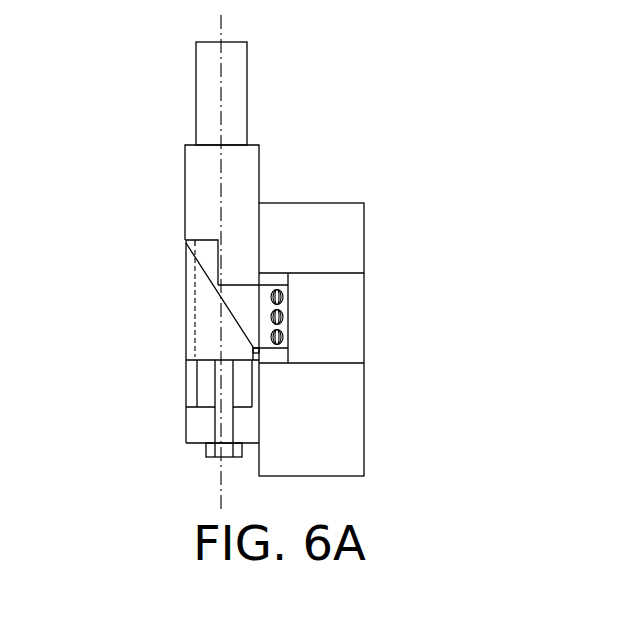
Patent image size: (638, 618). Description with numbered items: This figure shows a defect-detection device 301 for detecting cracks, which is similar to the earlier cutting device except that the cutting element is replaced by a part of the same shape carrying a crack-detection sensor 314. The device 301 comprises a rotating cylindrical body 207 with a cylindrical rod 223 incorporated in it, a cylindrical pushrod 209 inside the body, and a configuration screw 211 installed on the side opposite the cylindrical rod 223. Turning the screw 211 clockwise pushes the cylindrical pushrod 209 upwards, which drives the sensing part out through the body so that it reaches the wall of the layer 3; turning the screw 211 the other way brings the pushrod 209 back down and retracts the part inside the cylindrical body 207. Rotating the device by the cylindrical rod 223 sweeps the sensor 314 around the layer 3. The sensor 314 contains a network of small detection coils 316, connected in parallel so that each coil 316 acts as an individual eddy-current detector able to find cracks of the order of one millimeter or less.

The cylindrical rod 223 is at (195, 70).
The defect-detection device 301 is at (305, 110).
The rotating cylindrical body 207 is at (259, 154).
The crack-detection sensor 314 is at (247, 295).
The detection coils 316 is at (283, 297).
The layer 3 is at (345, 305).
The cylindrical pushrod 209 is at (210, 330).
The configuration screw 211 is at (210, 452).